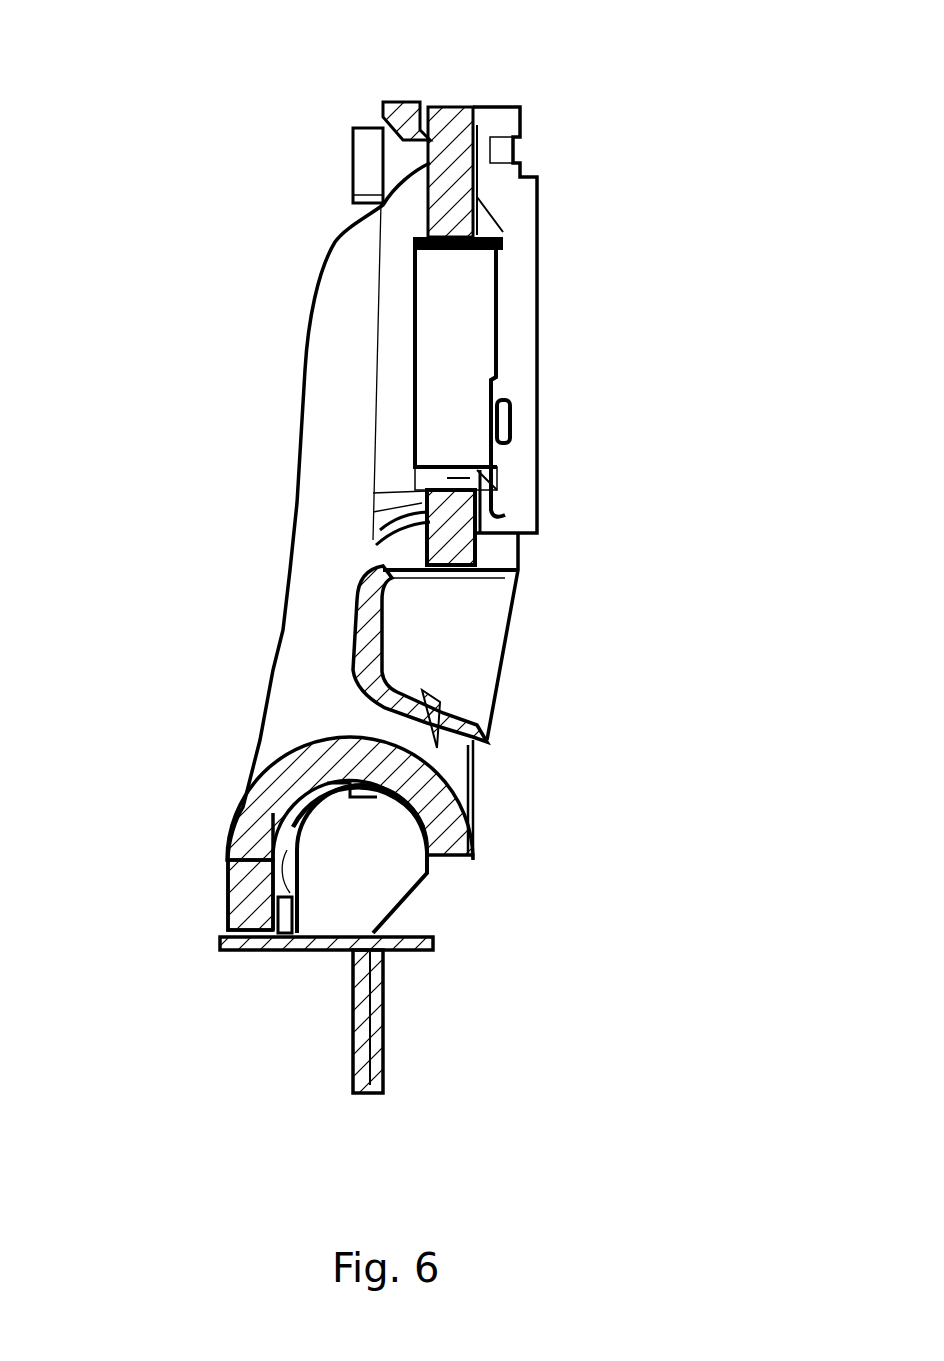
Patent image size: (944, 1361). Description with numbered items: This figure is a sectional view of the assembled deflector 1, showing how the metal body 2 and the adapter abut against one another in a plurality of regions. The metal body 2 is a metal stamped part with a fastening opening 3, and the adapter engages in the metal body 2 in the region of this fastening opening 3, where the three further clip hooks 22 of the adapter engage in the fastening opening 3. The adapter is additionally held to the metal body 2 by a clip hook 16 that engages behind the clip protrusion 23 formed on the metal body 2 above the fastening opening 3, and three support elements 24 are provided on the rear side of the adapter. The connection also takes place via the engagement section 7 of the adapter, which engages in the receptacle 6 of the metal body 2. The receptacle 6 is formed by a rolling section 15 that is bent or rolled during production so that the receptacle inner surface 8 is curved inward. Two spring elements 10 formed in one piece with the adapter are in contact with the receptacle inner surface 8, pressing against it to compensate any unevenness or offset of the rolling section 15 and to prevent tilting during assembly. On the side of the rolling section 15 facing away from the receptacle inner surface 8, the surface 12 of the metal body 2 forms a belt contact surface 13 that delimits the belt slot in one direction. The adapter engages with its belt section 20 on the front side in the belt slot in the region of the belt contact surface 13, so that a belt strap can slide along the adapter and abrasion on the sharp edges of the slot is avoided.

The deflector 1 is at (188, 222).
The metal body 2 is at (323, 365).
The fastening opening 3 is at (482, 342).
The receptacle 6 is at (266, 821).
The engagement section 7 is at (327, 915).
The receptacle inner surface 8 is at (325, 800).
The spring elements 10 is at (273, 897).
The surface 12 is at (256, 755).
The belt contact surface 13 is at (277, 698).
The rolling section 15 is at (436, 796).
The clip hook 16 is at (385, 104).
The belt section 20 is at (378, 636).
The further clip hooks 22 is at (460, 480).
The clip protrusion 23 is at (456, 107).
The support elements 24 is at (510, 425).